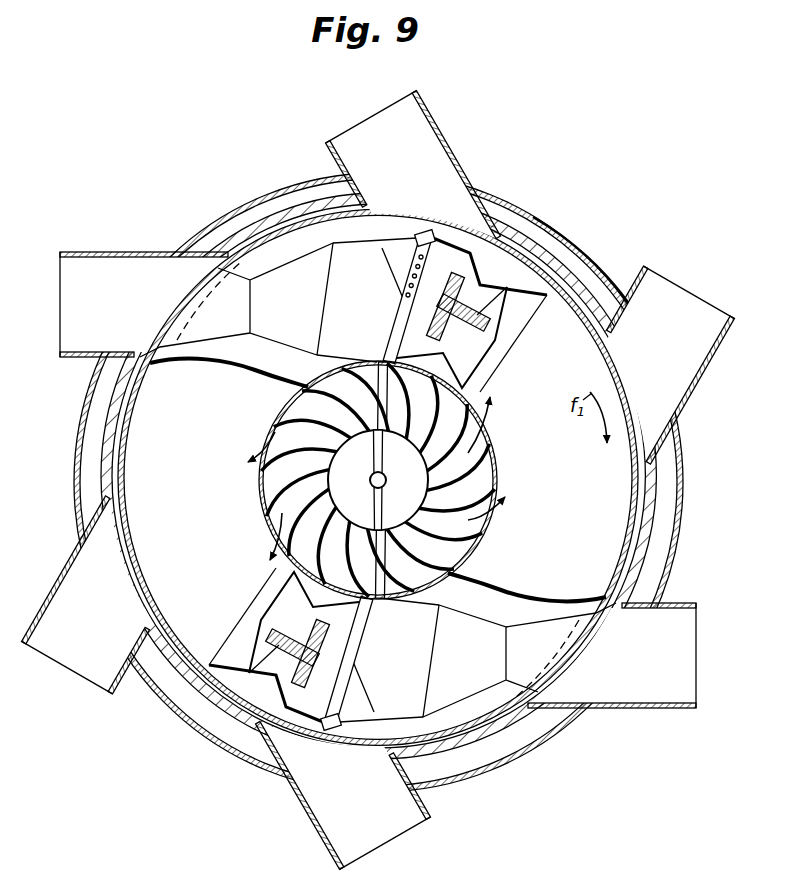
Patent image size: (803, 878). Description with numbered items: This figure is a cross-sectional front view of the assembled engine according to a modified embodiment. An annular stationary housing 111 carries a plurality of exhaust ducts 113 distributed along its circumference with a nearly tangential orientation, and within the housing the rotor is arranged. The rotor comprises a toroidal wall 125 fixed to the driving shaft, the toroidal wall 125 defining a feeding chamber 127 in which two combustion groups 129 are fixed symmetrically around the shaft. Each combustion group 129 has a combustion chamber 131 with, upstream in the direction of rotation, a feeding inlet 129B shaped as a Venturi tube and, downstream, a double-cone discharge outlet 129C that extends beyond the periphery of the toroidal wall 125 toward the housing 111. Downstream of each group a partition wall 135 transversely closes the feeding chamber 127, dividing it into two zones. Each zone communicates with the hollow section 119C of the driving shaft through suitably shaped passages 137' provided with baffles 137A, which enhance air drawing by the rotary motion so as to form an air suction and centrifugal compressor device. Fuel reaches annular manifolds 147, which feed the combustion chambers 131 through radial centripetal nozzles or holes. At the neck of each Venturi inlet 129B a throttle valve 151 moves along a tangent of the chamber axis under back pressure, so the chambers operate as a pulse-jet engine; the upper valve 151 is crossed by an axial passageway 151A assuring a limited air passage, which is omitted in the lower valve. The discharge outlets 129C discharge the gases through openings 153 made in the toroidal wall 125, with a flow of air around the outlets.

The annular stationary housing 111 is at (109, 628).
The exhaust ducts 113 is at (470, 736).
The hollow section of the driving shaft 119C is at (391, 464).
The toroidal wall 125 is at (418, 476).
The feeding chamber 127 is at (376, 482).
The combustion groups 129 is at (378, 425).
The feeding inlet 129B is at (398, 447).
The discharge outlet 129C is at (378, 480).
The combustion chamber 131 is at (413, 190).
The partition wall 135 is at (378, 477).
The passages 137' is at (405, 479).
The baffles 137A is at (390, 480).
The annular manifolds 147 is at (393, 457).
The throttle valve 151 is at (378, 496).
The axial passageway 151A is at (428, 479).
The openings 153 is at (397, 475).